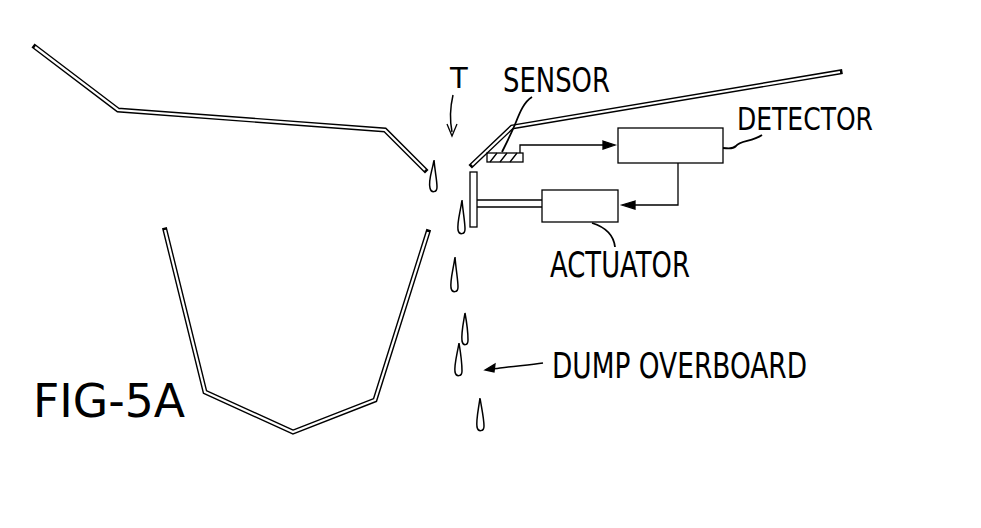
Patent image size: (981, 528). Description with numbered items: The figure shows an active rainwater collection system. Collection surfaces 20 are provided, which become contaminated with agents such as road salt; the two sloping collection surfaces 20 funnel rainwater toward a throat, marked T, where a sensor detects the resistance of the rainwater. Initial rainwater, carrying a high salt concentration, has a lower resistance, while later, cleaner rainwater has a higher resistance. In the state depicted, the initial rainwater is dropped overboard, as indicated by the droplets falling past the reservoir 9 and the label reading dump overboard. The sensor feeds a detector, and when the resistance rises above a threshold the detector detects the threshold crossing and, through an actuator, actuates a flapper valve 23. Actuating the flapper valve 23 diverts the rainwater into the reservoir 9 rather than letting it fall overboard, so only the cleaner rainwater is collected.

The collection surfaces 20 is at (260, 118).
The reservoir 9 is at (307, 298).
The flapper valve 23 is at (477, 223).